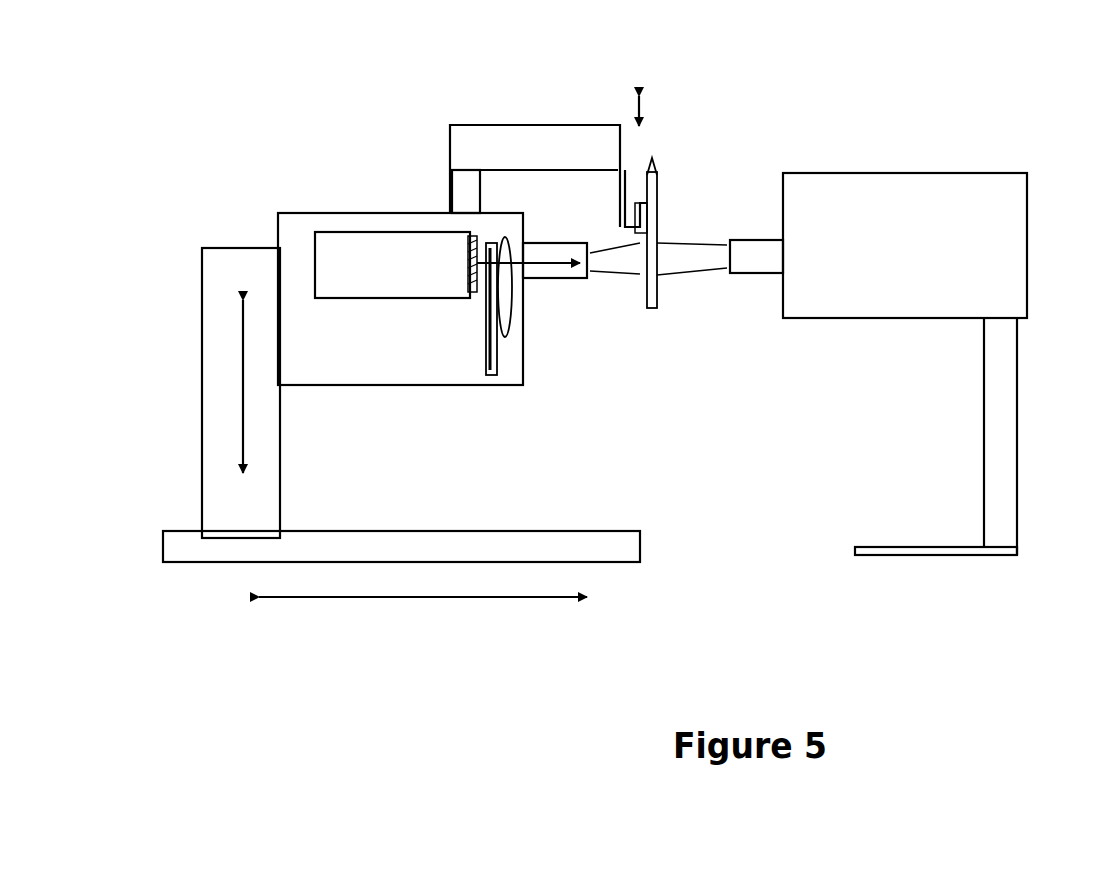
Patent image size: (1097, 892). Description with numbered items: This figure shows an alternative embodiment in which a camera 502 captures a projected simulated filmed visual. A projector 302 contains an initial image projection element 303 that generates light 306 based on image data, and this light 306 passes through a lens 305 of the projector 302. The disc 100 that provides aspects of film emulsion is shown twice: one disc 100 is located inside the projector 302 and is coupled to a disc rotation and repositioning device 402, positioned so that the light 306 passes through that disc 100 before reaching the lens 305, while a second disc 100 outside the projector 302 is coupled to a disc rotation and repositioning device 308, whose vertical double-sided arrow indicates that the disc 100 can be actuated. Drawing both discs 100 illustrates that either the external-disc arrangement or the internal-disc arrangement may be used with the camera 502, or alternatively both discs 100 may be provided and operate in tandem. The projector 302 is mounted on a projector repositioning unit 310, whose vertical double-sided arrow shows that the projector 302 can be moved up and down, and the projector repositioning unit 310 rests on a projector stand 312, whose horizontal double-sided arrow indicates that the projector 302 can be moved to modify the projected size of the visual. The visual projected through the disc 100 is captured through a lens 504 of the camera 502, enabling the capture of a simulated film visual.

The disc 100 is at (503, 300).
The projector 302 is at (380, 352).
The initial image projection element 303 is at (362, 243).
The lens 305 is at (537, 250).
The light 306 is at (473, 255).
The disc rotation and repositioning device 308 is at (610, 150).
The projector repositioning unit 310 is at (283, 437).
The projector stand 312 is at (585, 548).
The disc rotation and repositioning device 402 is at (498, 352).
The camera 502 is at (893, 187).
The lens 504 is at (758, 237).